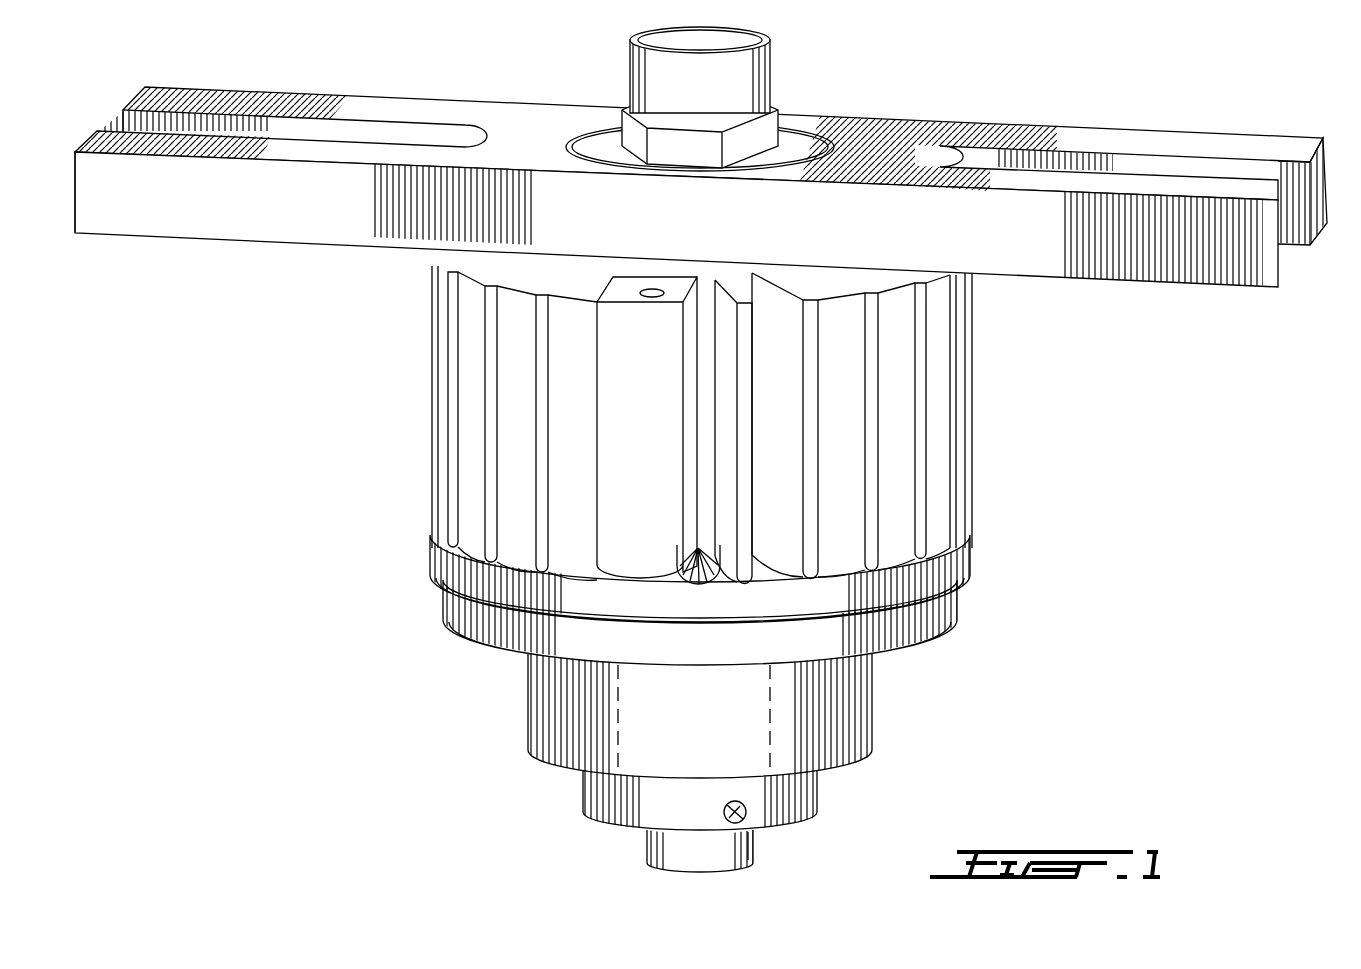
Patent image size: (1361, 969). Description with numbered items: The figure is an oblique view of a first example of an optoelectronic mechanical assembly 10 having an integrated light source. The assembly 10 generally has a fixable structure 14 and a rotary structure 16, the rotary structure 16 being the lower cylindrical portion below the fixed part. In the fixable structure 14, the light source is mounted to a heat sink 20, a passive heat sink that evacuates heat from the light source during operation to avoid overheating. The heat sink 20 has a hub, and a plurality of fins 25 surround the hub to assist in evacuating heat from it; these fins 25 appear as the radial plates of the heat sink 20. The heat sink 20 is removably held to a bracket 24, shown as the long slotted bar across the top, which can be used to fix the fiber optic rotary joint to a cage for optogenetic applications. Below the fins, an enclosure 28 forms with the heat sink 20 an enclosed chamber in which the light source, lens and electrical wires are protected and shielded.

The optoelectronic mechanical assembly 10 is at (700, 446).
The fixable structure 14 is at (708, 444).
The rotary structure 16 is at (868, 715).
The heat sink 20 is at (447, 562).
The bracket 24 is at (522, 127).
The fins 25 is at (933, 418).
The enclosure 28 is at (943, 610).